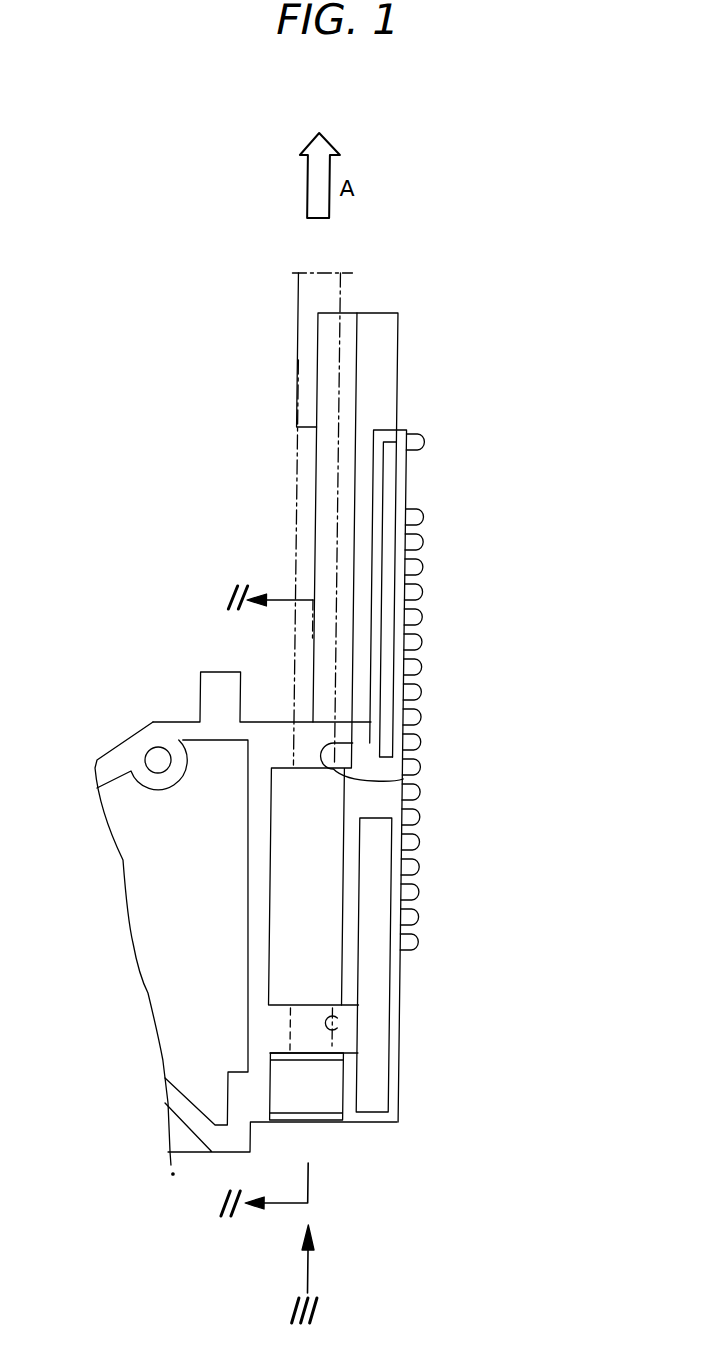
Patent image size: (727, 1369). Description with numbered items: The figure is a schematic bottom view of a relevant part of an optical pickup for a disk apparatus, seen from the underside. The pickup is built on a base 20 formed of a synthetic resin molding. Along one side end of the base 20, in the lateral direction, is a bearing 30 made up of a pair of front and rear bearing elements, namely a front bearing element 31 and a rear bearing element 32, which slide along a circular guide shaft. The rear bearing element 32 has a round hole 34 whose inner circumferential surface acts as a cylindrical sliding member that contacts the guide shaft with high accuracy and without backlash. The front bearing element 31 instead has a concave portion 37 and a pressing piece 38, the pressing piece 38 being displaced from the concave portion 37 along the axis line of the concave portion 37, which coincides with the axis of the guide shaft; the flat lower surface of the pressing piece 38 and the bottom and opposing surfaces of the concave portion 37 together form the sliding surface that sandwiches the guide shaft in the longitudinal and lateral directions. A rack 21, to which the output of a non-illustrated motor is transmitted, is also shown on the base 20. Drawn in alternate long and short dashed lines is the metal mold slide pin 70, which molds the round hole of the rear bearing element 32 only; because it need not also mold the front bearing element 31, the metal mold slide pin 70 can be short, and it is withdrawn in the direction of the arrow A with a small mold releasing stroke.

The base 20 is at (129, 885).
The rack 21 is at (421, 663).
The bearing 30 is at (441, 719).
The front bearing element 31 is at (509, 993).
The rear bearing element 32 is at (353, 743).
The round hole 34 is at (404, 779).
The concave portion 37 is at (341, 1028).
The pressing piece 38 is at (334, 1090).
The metal mold slide pin 70 is at (336, 300).